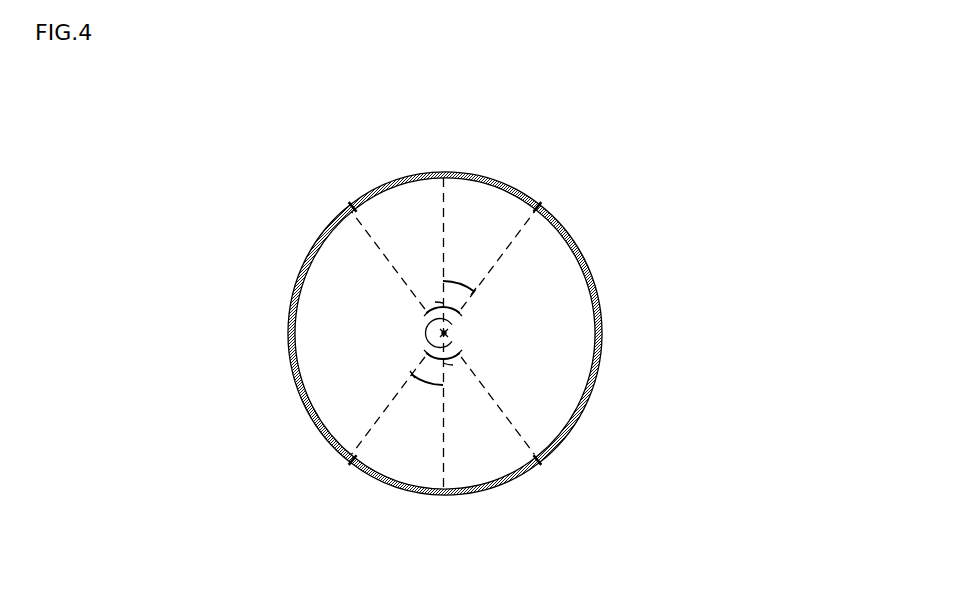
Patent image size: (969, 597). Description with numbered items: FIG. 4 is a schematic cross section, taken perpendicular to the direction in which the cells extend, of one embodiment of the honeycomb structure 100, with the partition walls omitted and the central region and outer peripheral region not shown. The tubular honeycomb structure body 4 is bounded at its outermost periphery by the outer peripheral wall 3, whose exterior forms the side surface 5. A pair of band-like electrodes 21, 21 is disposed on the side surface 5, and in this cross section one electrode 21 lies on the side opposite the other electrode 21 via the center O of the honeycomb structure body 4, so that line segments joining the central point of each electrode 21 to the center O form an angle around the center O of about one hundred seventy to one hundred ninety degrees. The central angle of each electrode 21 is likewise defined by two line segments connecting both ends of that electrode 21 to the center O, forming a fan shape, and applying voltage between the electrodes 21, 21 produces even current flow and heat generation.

The honeycomb structure 100 is at (828, 86).
The honeycomb structure body 4 is at (603, 327).
The electrode 21 is at (478, 175).
The outer peripheral wall 3 is at (538, 442).
The side surface 5 is at (330, 440).
The center O is at (452, 334).